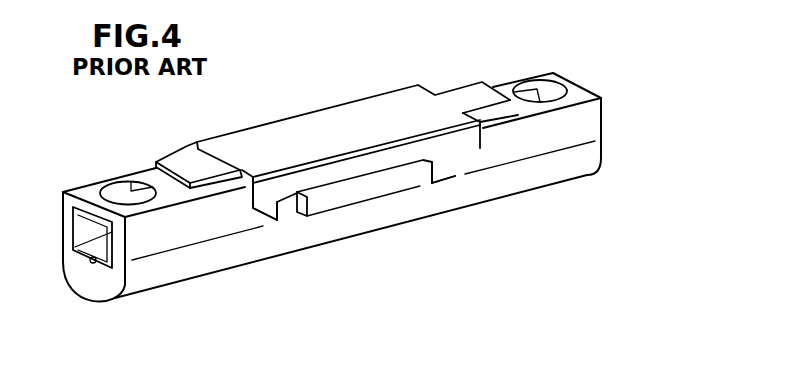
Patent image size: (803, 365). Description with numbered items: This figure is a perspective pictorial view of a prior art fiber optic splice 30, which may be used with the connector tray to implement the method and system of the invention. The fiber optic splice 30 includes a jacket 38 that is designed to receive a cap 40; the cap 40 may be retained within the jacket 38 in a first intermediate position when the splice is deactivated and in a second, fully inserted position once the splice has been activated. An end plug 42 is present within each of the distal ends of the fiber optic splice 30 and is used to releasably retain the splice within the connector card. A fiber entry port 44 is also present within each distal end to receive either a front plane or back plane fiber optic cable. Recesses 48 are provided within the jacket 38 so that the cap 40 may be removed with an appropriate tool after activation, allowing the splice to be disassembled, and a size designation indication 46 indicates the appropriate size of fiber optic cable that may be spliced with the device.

The fiber optic splice 30 is at (437, 76).
The jacket 38 is at (601, 165).
The cap 40 is at (303, 125).
The end plug 42 is at (95, 240).
The fiber entry port 44 is at (90, 262).
The size designation indication 46 is at (143, 198).
The recesses 48 is at (284, 222).